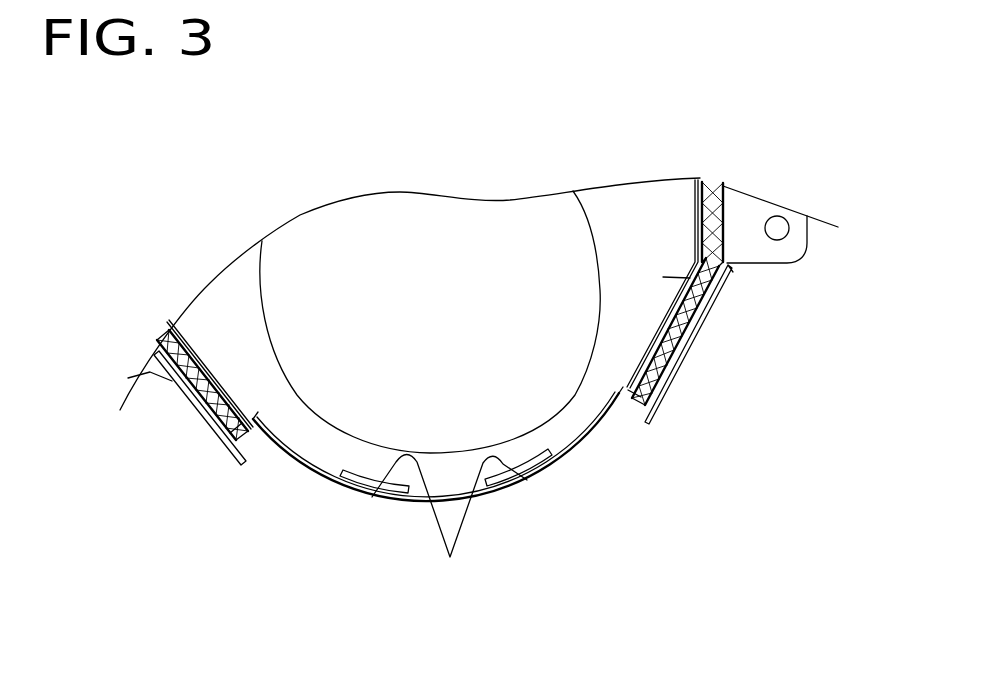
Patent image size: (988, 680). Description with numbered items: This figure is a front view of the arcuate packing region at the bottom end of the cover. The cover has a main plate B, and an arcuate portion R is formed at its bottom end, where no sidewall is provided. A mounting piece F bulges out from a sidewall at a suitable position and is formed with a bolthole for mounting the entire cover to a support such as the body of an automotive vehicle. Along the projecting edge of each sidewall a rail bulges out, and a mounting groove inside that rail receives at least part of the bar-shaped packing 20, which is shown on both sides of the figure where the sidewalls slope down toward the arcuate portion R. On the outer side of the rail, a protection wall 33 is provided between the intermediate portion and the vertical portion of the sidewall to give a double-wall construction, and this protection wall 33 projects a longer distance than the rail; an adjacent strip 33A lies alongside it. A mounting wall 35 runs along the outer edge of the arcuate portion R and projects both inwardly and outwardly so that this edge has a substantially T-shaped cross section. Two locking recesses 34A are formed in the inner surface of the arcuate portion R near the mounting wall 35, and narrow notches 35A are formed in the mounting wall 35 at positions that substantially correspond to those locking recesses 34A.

The bar-shaped packing 20 is at (205, 341).
The protection wall 33 is at (193, 413).
The holding strip 33A is at (222, 440).
The locking recesses 34A is at (449, 524).
The mounting wall 35 is at (327, 473).
The narrow notches 35A is at (372, 497).
The arcuate portion R is at (540, 433).
The main plate B is at (717, 287).
The mounting piece F is at (788, 250).